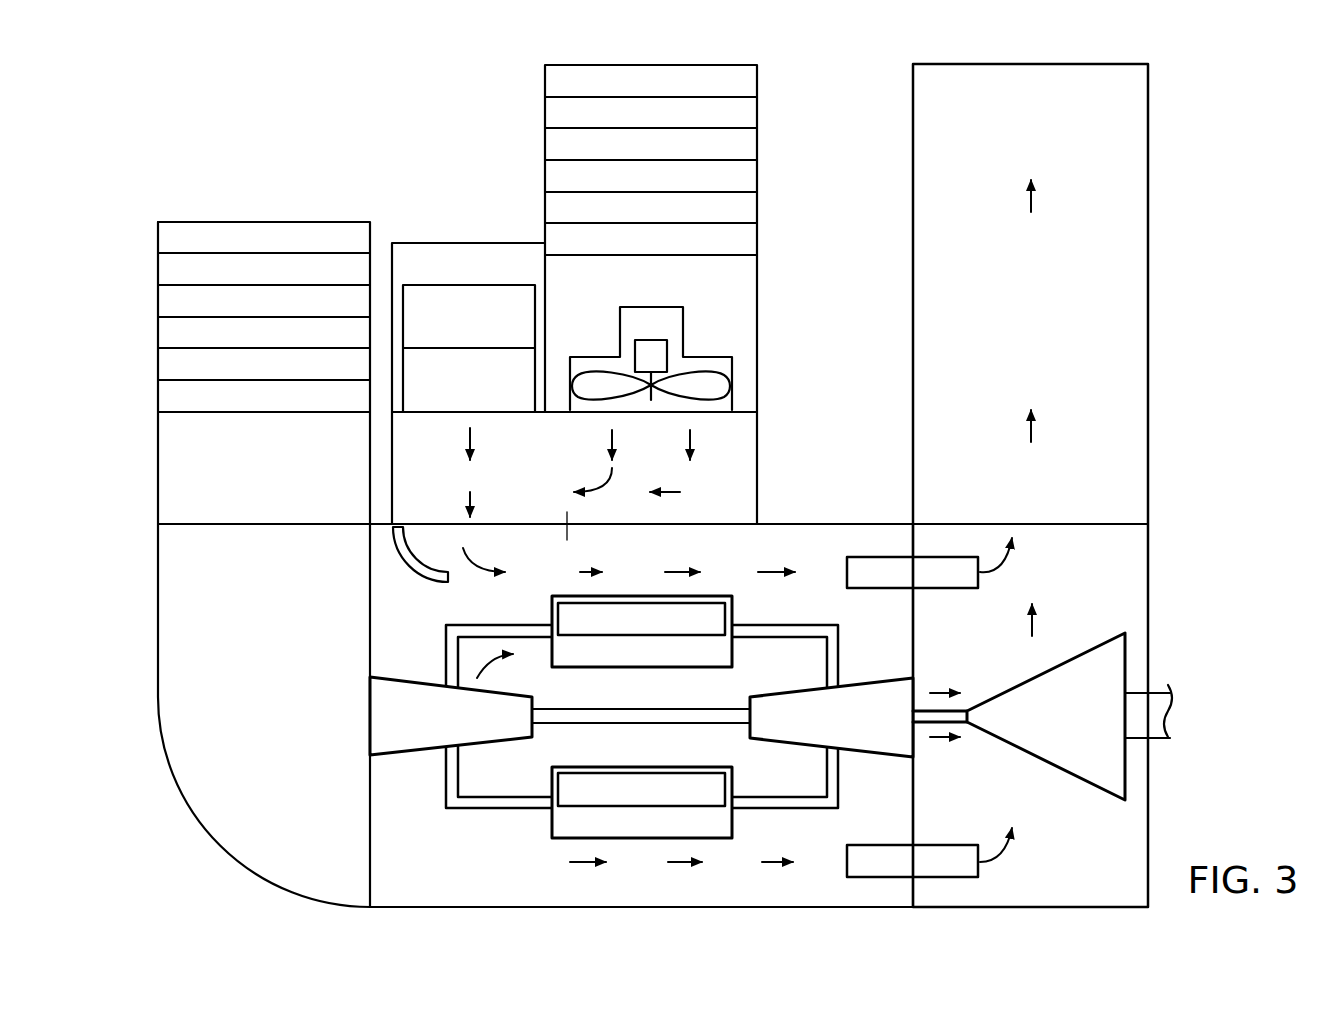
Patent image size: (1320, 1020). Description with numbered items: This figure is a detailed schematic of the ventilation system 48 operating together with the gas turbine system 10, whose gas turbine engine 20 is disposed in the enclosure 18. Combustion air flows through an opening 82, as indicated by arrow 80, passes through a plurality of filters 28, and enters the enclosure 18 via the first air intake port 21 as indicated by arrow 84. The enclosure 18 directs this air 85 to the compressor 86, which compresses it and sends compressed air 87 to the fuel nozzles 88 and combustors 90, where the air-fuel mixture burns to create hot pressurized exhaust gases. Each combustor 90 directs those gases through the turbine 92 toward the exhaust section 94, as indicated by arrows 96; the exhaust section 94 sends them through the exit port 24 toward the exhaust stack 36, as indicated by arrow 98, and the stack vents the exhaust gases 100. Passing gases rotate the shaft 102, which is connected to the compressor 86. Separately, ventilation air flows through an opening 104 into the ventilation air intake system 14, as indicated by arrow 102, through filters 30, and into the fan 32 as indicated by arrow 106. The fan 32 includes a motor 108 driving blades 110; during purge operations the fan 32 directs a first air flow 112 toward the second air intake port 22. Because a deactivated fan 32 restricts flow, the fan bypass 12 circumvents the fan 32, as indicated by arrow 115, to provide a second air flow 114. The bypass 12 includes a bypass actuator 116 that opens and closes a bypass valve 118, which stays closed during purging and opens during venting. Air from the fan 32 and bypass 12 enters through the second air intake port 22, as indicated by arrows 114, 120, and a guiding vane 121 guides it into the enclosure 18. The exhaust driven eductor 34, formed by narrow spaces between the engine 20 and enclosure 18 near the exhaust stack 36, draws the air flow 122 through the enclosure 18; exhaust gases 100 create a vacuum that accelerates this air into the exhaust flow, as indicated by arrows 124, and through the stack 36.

The gas turbine system 10 is at (833, 495).
The fan bypass 12 is at (470, 243).
The ventilation air intake system 14 is at (522, 77).
The enclosure 18 is at (410, 907).
The gas turbine engine 20 is at (443, 823).
The first air intake port 21 is at (232, 524).
The second air intake port 22 is at (438, 530).
The exit port 24 is at (1065, 524).
The filters 28 is at (158, 268).
The filters 30 is at (758, 112).
The fan 32 is at (684, 325).
The exhaust driven eductor 34 is at (945, 589).
The exhaust stack 36 is at (1148, 300).
The ventilation system 48 is at (861, 103).
The arrow indicating air flow into opening 80 is at (265, 236).
The opening 82 is at (200, 222).
The arrow indicating air entering first intake port 84 is at (263, 543).
The air 85 is at (355, 697).
The compressor 86 is at (400, 755).
The compressed air 87 is at (492, 666).
The fuel nozzles 88 is at (556, 615).
The combustor 90 is at (648, 667).
The turbine 92 is at (865, 680).
The exhaust section 94 is at (1045, 762).
The arrows indicating exhaust gas flow 96 is at (942, 690).
The arrow indicating exhaust flow to stack 98 is at (1033, 620).
The exhaust gases 100 is at (1032, 200).
The shaft 102 is at (651, 82).
The opening 104 is at (758, 80).
The arrow indicating air flow into fan 106 is at (651, 262).
The motor 108 is at (668, 348).
The blades 110 is at (730, 385).
The first air flow 112 is at (611, 441).
The second air flow 114 is at (471, 432).
The arrow indicating bypass circumvention 115 is at (540, 392).
The bypass actuator 116 is at (538, 302).
The bypass valve 118 is at (432, 414).
The arrow indicating bypass air flow 120 is at (505, 492).
The guiding vane 121 is at (403, 583).
The air flow through enclosure 122 is at (585, 570).
The arrows indicating air flow into exhaust 124 is at (1013, 567).